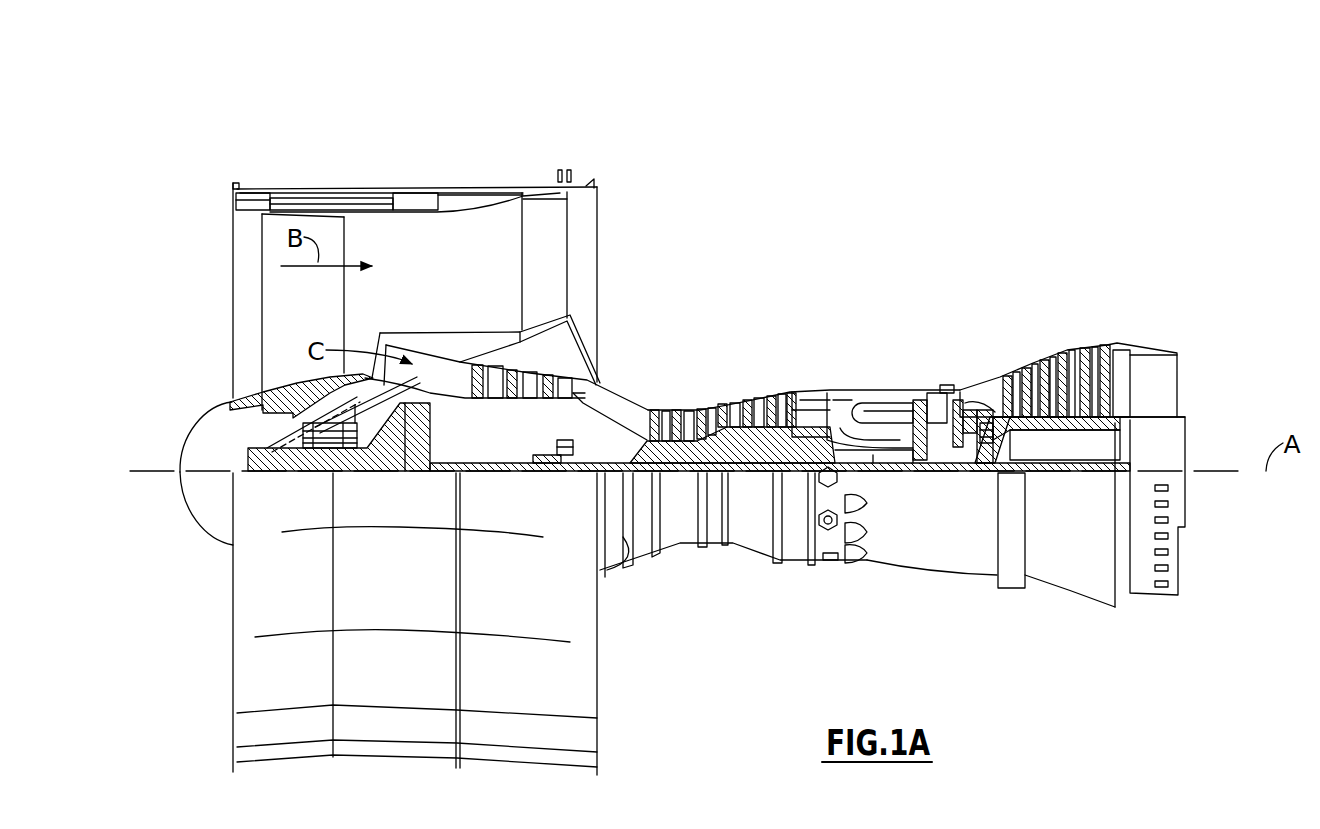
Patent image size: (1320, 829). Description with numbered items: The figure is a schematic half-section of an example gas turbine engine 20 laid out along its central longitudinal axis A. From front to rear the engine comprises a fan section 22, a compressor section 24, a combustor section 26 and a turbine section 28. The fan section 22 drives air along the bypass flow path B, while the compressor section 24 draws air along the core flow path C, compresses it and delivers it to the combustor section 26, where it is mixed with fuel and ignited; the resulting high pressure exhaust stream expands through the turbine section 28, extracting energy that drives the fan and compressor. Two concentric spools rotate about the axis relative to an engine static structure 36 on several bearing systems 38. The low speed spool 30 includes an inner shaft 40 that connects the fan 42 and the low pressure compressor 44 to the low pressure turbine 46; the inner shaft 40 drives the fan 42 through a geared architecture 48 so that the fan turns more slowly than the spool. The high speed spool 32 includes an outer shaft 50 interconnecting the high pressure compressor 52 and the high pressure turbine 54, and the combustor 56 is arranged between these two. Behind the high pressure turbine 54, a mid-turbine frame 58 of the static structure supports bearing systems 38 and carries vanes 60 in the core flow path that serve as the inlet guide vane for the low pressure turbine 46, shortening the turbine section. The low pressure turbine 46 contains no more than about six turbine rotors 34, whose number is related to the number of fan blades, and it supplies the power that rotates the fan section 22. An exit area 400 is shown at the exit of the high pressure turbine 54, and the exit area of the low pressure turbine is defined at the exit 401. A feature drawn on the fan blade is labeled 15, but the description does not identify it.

The fan blades 15 is at (415, 192).
The gas turbine engine 20 is at (878, 239).
The fan section 22 is at (341, 176).
The compressor section 24 is at (641, 382).
The combustor section 26 is at (866, 368).
The turbine section 28 is at (1013, 333).
The low speed spool 30 is at (753, 484).
The high speed spool 32 is at (792, 437).
The turbine rotors 34 is at (1088, 425).
The engine static structure 36 is at (794, 570).
The bearing systems 38 is at (988, 452).
The inner shaft 40 is at (615, 490).
The fan 42 is at (288, 317).
The low pressure compressor section 44 is at (527, 375).
The low pressure turbine section 46 is at (1062, 350).
The geared architecture 48 is at (420, 453).
The outer shaft 50 is at (881, 468).
The high pressure compressor section 52 is at (725, 437).
The high pressure turbine section 54 is at (958, 478).
The combustor 56 is at (867, 413).
The mid-turbine frame 58 is at (979, 380).
The vanes 60 is at (1012, 445).
The exit area 400 is at (964, 392).
The exit 401 is at (1118, 352).